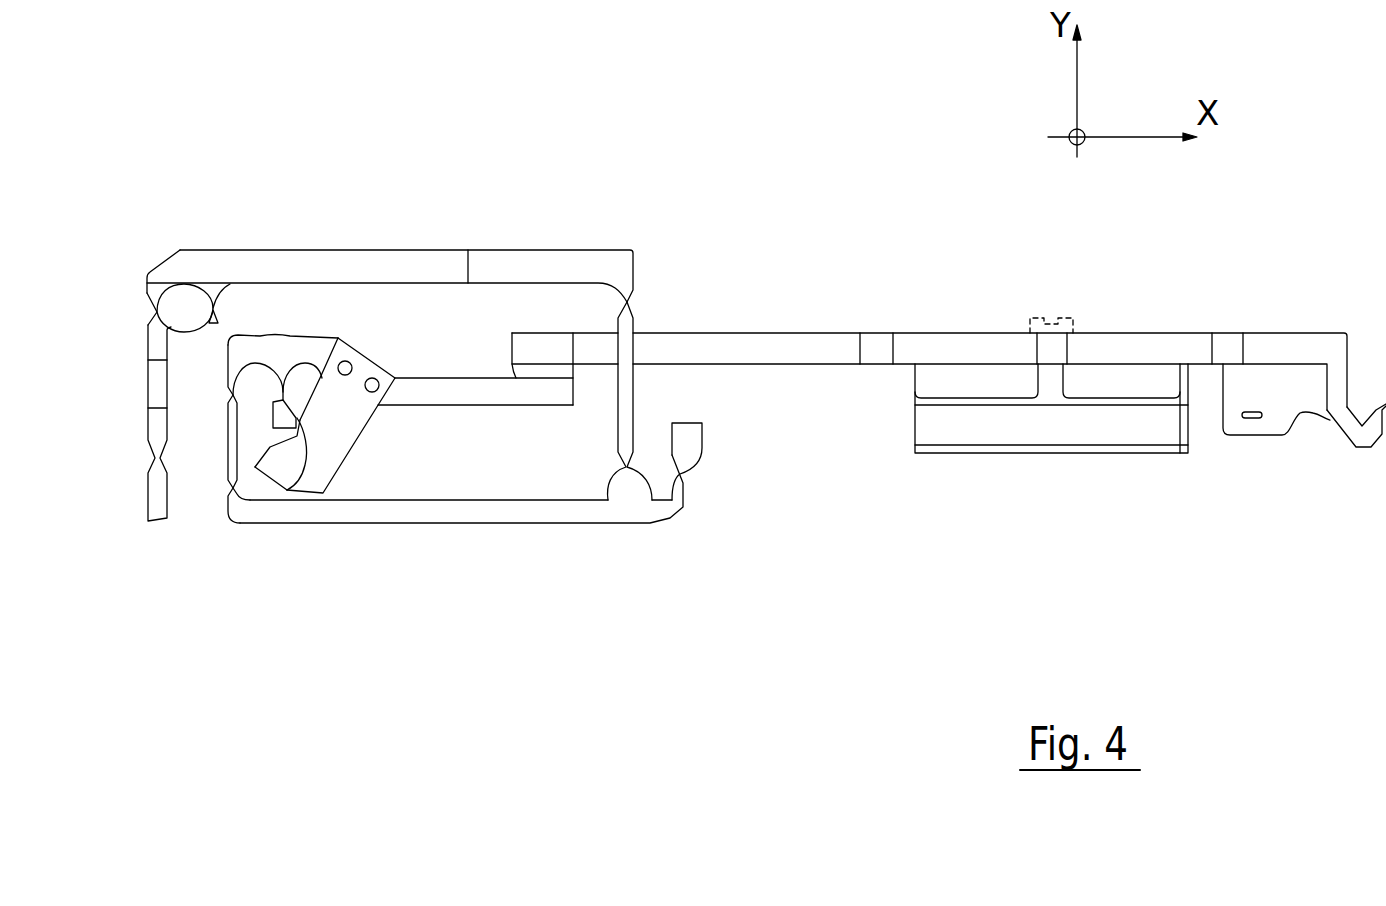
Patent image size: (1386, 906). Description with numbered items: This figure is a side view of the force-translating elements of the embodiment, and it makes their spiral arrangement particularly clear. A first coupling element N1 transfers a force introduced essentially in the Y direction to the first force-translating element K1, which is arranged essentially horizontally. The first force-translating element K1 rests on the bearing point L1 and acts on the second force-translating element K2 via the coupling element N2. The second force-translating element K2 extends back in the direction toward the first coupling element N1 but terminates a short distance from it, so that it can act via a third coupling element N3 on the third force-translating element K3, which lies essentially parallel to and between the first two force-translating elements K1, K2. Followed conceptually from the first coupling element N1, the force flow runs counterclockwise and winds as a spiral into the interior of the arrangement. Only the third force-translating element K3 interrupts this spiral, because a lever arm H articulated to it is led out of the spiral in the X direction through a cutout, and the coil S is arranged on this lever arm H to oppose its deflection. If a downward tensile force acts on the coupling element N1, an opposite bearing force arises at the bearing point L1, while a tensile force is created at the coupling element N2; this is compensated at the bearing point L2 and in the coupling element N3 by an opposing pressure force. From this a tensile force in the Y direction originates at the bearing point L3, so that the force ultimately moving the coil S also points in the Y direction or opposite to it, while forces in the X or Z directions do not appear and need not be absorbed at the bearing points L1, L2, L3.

The first force-translating element K1 is at (450, 257).
The second force-translating element K2 is at (512, 508).
The third force-translating element K3 is at (421, 392).
The bearing point L1 is at (213, 308).
The bearing point L2 is at (680, 474).
The bearing point L3 is at (292, 478).
The first coupling element N1 is at (150, 422).
The coupling element N2 is at (625, 400).
The third coupling element N3 is at (230, 443).
The lever arm H is at (837, 343).
The coil S is at (1135, 428).